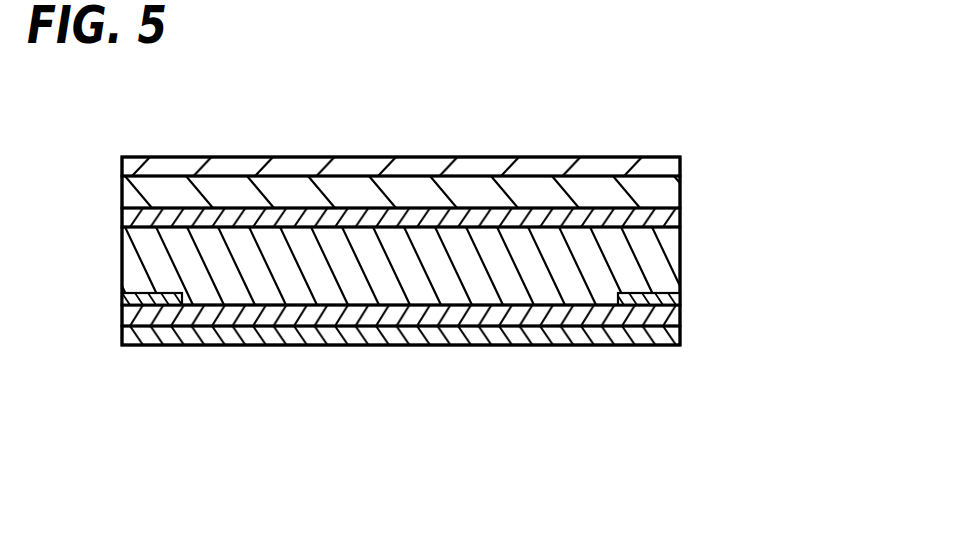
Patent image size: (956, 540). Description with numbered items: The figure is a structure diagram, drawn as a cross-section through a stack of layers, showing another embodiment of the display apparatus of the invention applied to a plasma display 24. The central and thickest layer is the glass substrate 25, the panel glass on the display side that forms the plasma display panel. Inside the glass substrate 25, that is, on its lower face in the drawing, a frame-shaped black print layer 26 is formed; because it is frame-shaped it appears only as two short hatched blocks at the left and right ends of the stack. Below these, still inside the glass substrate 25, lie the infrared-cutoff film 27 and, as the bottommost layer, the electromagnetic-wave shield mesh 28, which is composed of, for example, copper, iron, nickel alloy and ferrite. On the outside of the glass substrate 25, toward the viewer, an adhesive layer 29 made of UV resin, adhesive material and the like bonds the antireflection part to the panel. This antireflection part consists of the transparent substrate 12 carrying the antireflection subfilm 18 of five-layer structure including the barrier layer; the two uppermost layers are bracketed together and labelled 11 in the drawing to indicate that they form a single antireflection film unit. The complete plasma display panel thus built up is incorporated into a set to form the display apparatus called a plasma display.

The plasma display 24 is at (444, 248).
The substrate assembly 11 is at (482, 178).
The antireflection subfilm 18 is at (683, 164).
The transparent substrate 12 is at (445, 199).
The adhesive layer 29 is at (160, 217).
The glass substrate 25 is at (665, 255).
The black print layer 26 is at (665, 298).
The infrared-cutoff film 27 is at (153, 311).
The electromagnetic-wave shield mesh 28 is at (145, 347).